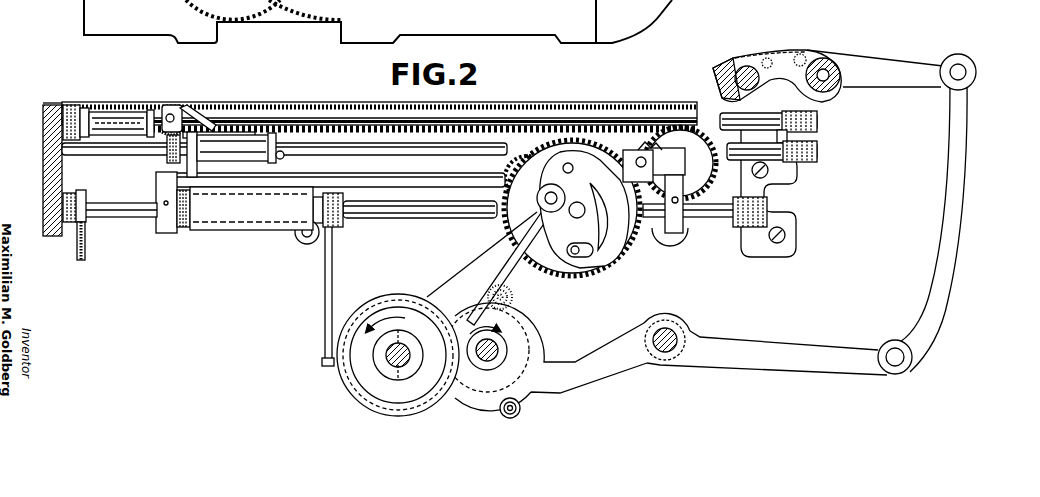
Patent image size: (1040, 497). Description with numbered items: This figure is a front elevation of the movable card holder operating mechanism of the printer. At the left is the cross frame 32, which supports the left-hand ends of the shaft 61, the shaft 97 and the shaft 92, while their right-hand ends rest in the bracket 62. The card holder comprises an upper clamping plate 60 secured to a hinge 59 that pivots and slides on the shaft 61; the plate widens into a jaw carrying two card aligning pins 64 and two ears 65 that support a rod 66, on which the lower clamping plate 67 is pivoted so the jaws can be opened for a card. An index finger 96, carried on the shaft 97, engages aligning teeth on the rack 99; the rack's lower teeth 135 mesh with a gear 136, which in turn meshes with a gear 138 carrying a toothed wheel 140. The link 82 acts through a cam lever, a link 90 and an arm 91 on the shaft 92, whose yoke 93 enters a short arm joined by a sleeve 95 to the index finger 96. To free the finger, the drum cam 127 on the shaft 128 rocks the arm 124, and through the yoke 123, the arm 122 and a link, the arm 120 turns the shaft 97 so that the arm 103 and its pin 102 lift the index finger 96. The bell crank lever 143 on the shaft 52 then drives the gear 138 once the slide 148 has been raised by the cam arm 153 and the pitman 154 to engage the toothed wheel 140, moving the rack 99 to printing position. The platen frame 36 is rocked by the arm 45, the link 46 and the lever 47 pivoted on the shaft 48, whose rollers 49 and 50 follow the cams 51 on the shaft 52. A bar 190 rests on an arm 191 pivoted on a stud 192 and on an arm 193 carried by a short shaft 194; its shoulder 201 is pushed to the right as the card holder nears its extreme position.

The cross frame 32 is at (55, 234).
The platen frame 36 is at (800, 52).
The arm 45 is at (870, 68).
The link 46 is at (945, 172).
The lever 47 is at (724, 350).
The shaft 48 is at (672, 330).
The roller 49 is at (521, 411).
The roller 50 is at (525, 283).
The cams 51 is at (536, 338).
The shaft 52 is at (487, 362).
The hinge 59 is at (110, 124).
The clamping plate 60 is at (117, 108).
The shaft 61 is at (323, 120).
The bracket 62 is at (790, 182).
The card aligning pins 64 is at (243, 134).
The ears 65 is at (161, 110).
The rod 66 is at (173, 115).
The clamping plate 67 is at (207, 122).
The link 82 is at (279, 10).
The link 90 is at (86, 256).
The arm 91 is at (79, 193).
The shaft 92 is at (103, 208).
The yoke 93 is at (467, 180).
The sleeve 95 is at (233, 156).
The index finger 96 is at (281, 103).
The shaft 97 is at (378, 153).
The rack 99 is at (617, 118).
The pin 102 is at (775, 113).
The arm 103 is at (792, 170).
The arm 120 is at (165, 152).
The arm 122 is at (203, 220).
The yoke 123 is at (255, 219).
The arm 124 is at (336, 259).
The drum cam 127 is at (380, 297).
The shaft 128 is at (394, 366).
The teeth 135 is at (556, 140).
The gear 136 is at (653, 142).
The gear 138 is at (610, 265).
The toothed wheel 140 is at (595, 148).
The bell crank lever 143 is at (588, 270).
The slide 148 is at (602, 245).
The cam arm 153 is at (588, 278).
The pitman 154 is at (487, 247).
The bar 190 is at (510, 187).
The arm 191 is at (307, 244).
The stud 192 is at (296, 257).
The arm 193 is at (687, 238).
The short shaft 194 is at (672, 242).
The shoulder 201 is at (677, 148).